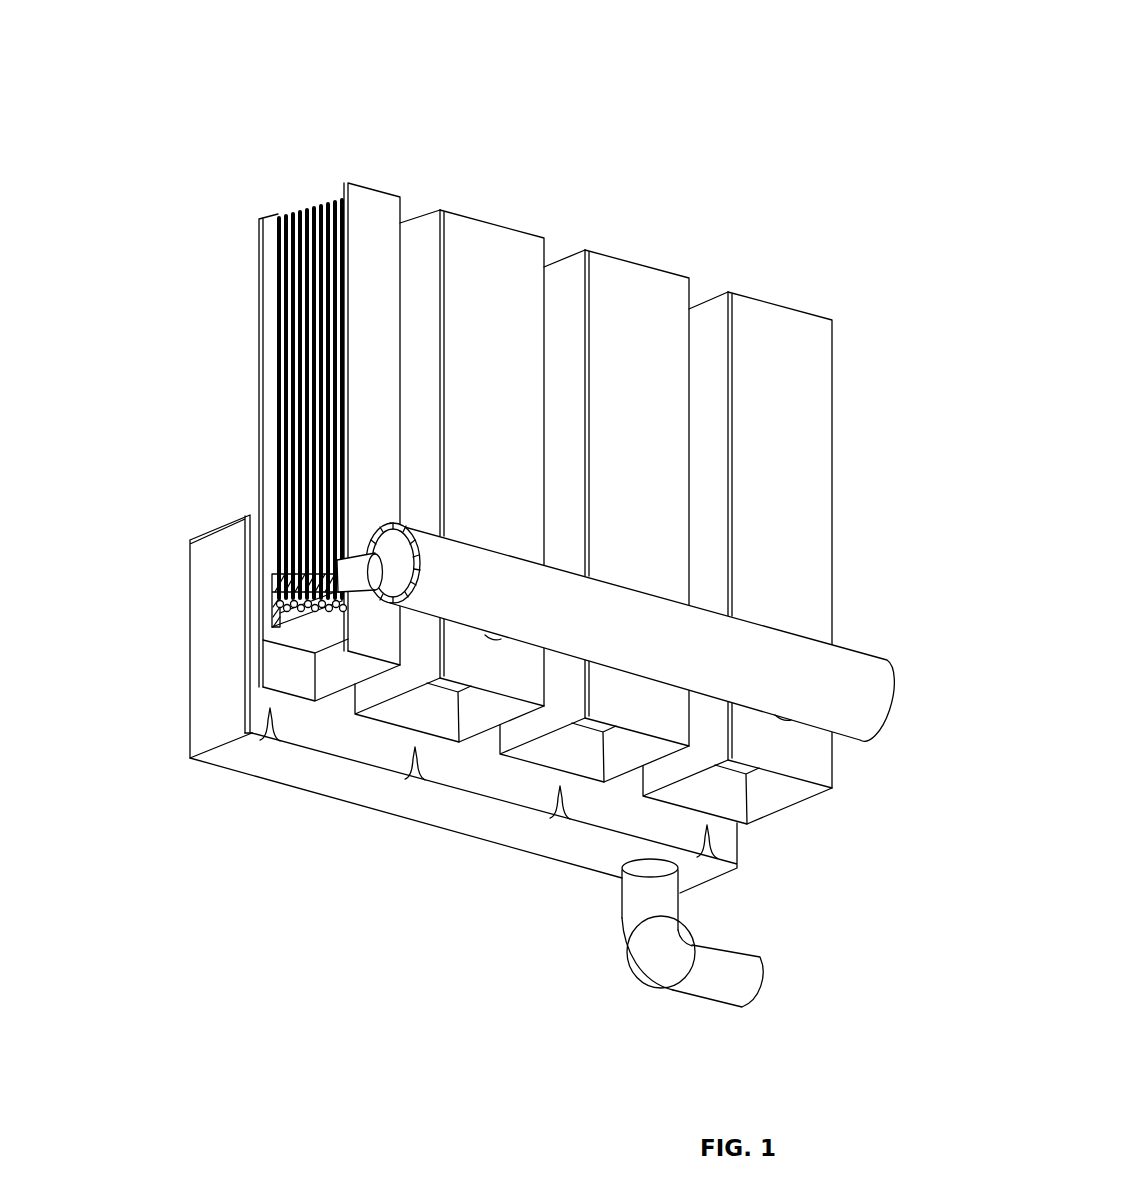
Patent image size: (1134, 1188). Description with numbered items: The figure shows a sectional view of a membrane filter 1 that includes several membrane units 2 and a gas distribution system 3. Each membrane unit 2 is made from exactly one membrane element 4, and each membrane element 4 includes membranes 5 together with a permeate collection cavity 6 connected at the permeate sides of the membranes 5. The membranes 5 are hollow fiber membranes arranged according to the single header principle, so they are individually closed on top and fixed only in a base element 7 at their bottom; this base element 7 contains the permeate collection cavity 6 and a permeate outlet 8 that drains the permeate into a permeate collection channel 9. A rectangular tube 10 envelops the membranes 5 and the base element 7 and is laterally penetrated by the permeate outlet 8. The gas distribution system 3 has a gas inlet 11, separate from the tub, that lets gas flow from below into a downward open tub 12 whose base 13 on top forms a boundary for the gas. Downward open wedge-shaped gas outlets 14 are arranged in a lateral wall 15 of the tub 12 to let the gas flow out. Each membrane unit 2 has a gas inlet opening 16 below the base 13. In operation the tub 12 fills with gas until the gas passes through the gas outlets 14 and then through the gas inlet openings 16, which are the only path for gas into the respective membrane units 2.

The membrane filter 1 is at (527, 538).
The membrane unit 2 is at (500, 542).
The gas distribution system 3 is at (483, 741).
The membrane element 4 is at (500, 542).
The membranes 5 is at (280, 260).
The permeate collection cavity 6 is at (290, 611).
The base element 7 is at (300, 640).
The permeate outlet 8 is at (337, 572).
The permeate collection channel 9 is at (883, 695).
The rectangular tube 10 is at (262, 420).
The gas inlet 11 is at (661, 907).
The tub 12 is at (508, 838).
The base 13 is at (213, 530).
The gas outlets 14 is at (413, 782).
The lateral wall 15 is at (252, 713).
The gas inlet opening 16 is at (613, 750).